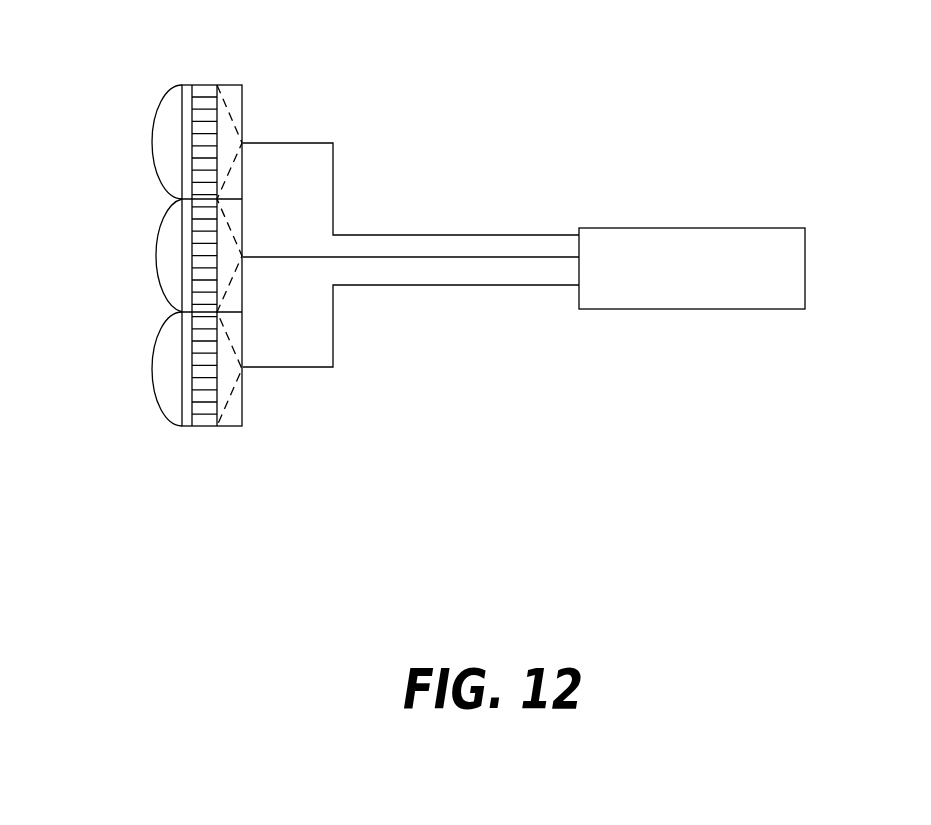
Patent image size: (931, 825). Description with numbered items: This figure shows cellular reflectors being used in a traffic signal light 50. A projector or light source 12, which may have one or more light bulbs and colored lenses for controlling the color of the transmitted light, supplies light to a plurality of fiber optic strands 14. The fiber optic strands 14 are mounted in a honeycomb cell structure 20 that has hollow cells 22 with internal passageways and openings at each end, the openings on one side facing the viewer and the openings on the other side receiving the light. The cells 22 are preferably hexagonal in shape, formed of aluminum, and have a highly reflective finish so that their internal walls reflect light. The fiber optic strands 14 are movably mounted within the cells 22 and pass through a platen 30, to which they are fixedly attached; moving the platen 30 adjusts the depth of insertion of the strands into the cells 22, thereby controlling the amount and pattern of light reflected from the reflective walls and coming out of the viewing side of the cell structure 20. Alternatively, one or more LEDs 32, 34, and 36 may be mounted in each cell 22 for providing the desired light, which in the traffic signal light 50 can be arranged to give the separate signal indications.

The light source 12 is at (703, 228).
The fiber optic strands 14 is at (399, 218).
The honeycomb cell structure 20 is at (211, 72).
The cells 22 is at (208, 420).
The platen 30 is at (243, 398).
The LED 32 is at (153, 158).
The LED 34 is at (153, 269).
The LED 36 is at (153, 381).
The traffic signal light 50 is at (123, 110).